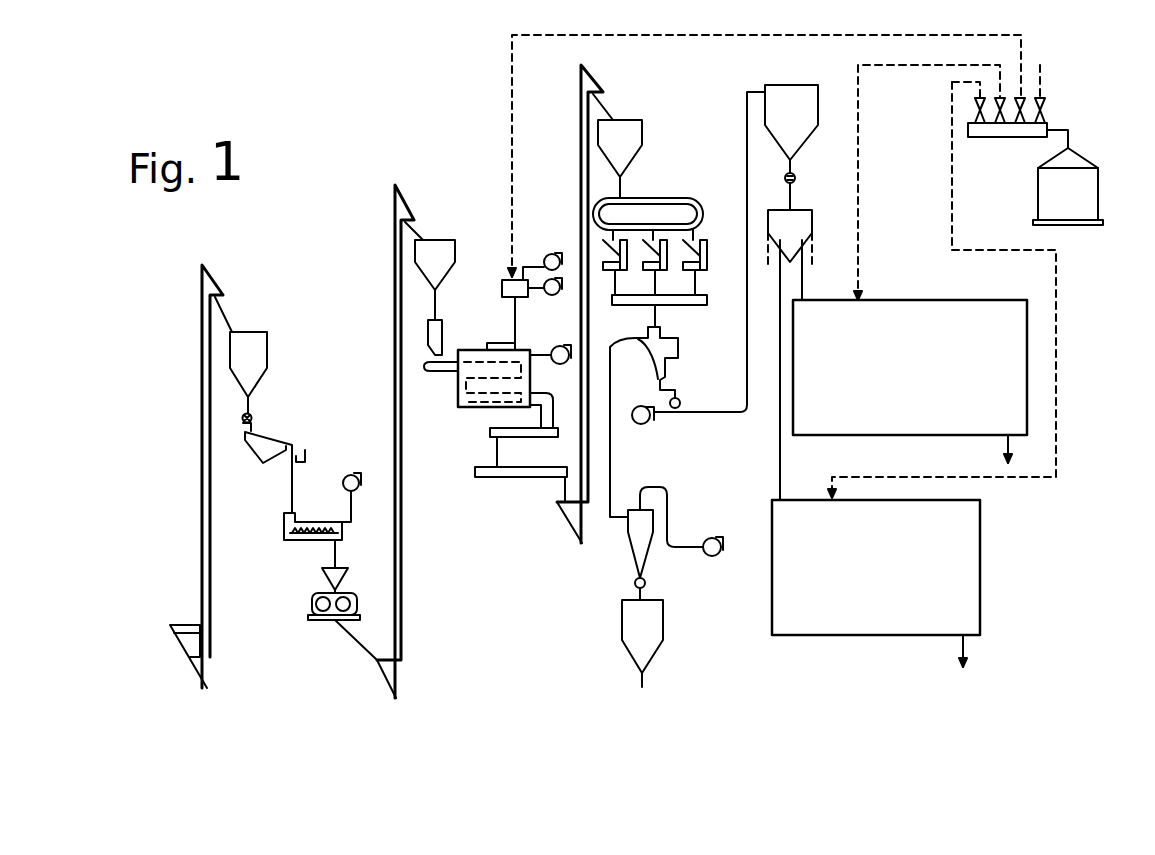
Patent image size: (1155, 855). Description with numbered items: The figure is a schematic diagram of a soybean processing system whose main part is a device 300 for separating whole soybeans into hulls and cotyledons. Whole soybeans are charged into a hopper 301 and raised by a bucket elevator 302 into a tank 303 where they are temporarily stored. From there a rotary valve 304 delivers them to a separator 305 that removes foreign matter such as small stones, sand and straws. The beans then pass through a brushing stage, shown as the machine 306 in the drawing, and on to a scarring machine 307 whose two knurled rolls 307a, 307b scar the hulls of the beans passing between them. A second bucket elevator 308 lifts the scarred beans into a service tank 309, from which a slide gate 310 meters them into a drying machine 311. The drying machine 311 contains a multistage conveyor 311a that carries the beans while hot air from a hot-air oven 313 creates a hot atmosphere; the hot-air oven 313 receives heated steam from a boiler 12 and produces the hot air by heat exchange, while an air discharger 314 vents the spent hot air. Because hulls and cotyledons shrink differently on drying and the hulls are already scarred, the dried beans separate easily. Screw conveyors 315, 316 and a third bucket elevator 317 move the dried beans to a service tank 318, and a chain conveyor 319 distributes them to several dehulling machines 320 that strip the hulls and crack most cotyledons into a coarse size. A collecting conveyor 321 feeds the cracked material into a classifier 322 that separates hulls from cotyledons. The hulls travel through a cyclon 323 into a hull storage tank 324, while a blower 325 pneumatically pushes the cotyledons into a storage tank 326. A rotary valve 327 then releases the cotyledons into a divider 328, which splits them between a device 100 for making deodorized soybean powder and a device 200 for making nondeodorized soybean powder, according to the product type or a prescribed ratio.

The boiler 12 is at (1092, 192).
The device for manufacturing deodorized soybean powder 100 is at (909, 389).
The device for manufacturing nondeodorized soybean powder 200 is at (876, 588).
The device for separating soybeans into hulls and cotyledons 300 is at (421, 132).
The hopper 301 is at (182, 640).
The bucket elevator 302 is at (207, 505).
The tank 303 is at (258, 348).
The rotary valve 304 is at (252, 418).
The separator 305 is at (260, 448).
The screw conveyor 306 is at (290, 537).
The scarring machine 307 is at (322, 620).
The knurled roll 307a is at (320, 613).
The knurled roll 307b is at (361, 590).
The bucket elevator 308 is at (395, 407).
The service tank 309 is at (447, 257).
The slide gate 310 is at (442, 333).
The drying machine 311 is at (480, 405).
The multistage conveyor 311a is at (455, 395).
The hot-air oven 313 is at (502, 288).
The air discharger 314 is at (560, 345).
The screw conveyor 315 is at (513, 437).
The screw conveyor 316 is at (512, 477).
The bucket elevator 317 is at (578, 152).
The service tank 318 is at (635, 132).
The chain conveyor 319 is at (675, 197).
The dehulling machines 320 is at (707, 257).
The collecting conveyor 321 is at (703, 305).
The classifier 322 is at (678, 355).
The cyclon 323 is at (632, 533).
The hull storage tank 324 is at (630, 627).
The blower 325 is at (640, 420).
The storage tank 326 is at (810, 110).
The rotary valve 327 is at (795, 178).
The divider 328 is at (802, 222).